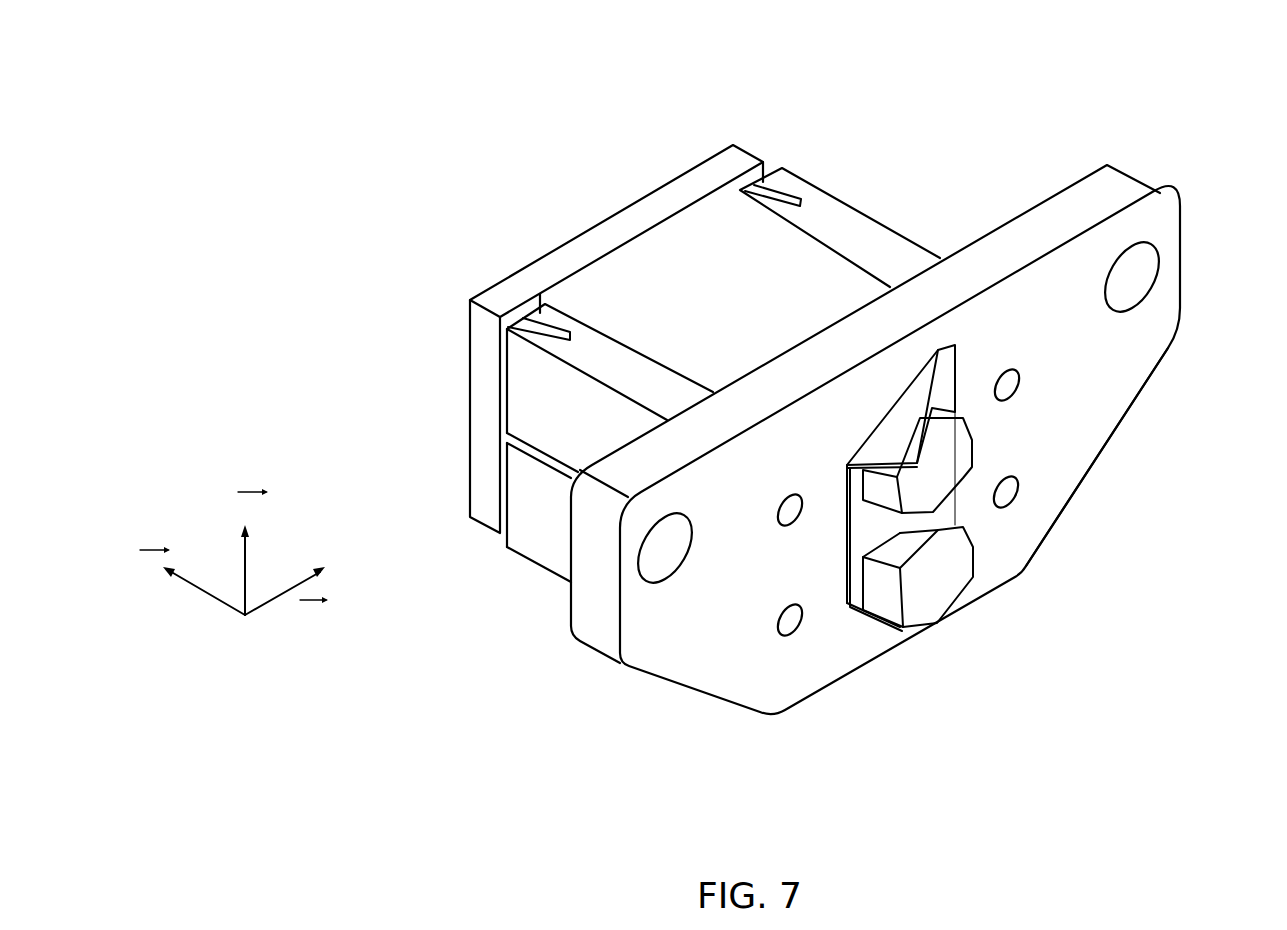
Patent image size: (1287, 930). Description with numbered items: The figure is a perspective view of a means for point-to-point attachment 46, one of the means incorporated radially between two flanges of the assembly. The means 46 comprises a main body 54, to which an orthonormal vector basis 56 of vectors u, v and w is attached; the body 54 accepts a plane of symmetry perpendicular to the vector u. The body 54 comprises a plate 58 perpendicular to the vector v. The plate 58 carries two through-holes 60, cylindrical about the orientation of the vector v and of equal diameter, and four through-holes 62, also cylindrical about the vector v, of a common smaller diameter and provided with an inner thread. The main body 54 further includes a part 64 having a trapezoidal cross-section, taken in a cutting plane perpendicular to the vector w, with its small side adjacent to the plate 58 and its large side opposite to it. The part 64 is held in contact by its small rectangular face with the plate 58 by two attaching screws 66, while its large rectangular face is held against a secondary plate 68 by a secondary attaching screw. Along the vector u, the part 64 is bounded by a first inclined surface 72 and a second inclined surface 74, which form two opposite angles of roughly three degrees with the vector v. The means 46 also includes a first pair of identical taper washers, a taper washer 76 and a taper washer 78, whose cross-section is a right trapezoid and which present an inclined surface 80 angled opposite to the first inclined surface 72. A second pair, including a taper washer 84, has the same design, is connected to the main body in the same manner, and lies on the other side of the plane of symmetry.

The means for point-to-point attachment 46 is at (1172, 80).
The main body 54 is at (1112, 472).
The orthonormal vector basis 56 is at (200, 635).
The plate 58 is at (1103, 383).
The through-holes 60 is at (1145, 275).
The through-holes 62 is at (1008, 387).
The part having a trapezoidal cross-section 64 is at (733, 253).
The attaching screws 66 is at (930, 470).
The secondary plate 68 is at (594, 244).
The first inclined surface 72 is at (600, 337).
The second inclined surface 74 is at (818, 227).
The taper washer 76 is at (553, 403).
The taper washer 78 is at (538, 523).
The inclined surface 80 is at (643, 332).
The taper washer 84 is at (911, 245).